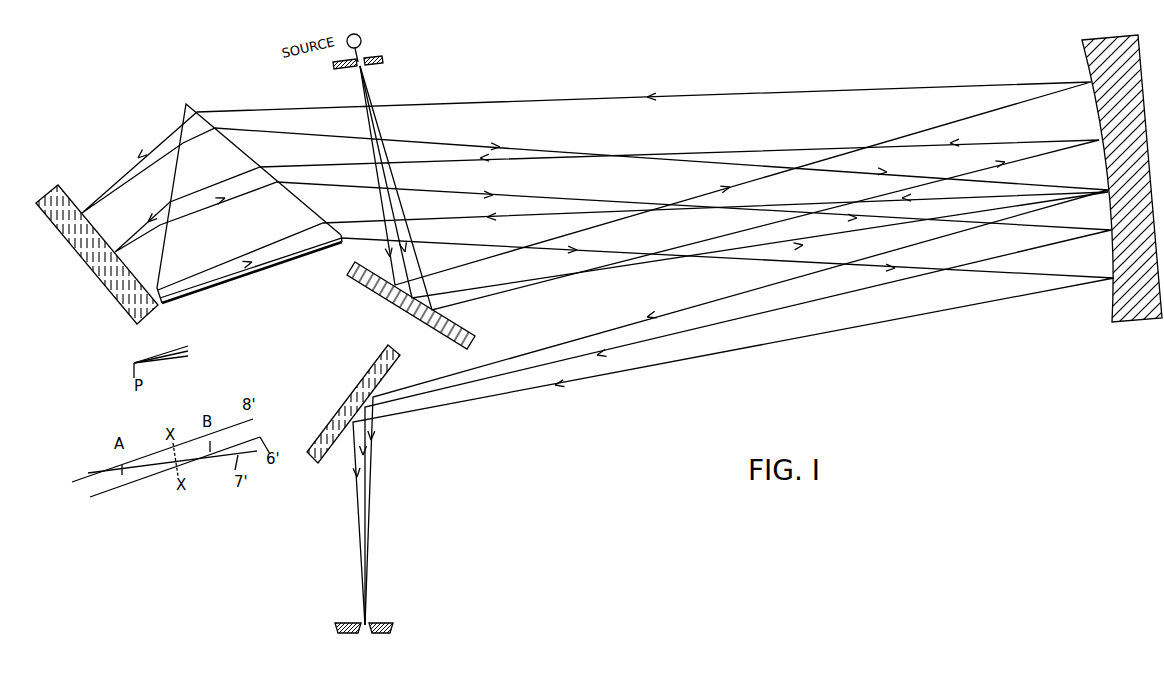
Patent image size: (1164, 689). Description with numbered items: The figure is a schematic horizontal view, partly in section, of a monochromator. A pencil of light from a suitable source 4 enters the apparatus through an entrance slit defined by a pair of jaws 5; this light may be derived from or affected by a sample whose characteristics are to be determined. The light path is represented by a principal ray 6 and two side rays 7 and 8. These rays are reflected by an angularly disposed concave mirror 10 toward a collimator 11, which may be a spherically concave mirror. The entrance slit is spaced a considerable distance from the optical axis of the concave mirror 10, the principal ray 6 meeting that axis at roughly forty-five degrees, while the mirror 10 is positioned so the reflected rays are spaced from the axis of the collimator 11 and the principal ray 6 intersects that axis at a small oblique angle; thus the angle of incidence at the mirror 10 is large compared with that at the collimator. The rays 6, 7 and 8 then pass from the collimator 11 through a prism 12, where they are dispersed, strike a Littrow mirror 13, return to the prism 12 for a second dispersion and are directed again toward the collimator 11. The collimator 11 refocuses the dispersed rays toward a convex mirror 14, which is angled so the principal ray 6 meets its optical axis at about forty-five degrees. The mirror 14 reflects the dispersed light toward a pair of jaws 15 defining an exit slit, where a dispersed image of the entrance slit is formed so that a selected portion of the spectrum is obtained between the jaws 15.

The source 4 is at (362, 40).
The jaws 5 is at (384, 58).
The principal ray 6 is at (795, 147).
The side ray 7 is at (777, 203).
The side ray 8 is at (813, 90).
The concave mirror 10 is at (392, 305).
The collimator 11 is at (1127, 325).
The prism 12 is at (233, 283).
The Littrow mirror 13 is at (108, 297).
The convex mirror 14 is at (351, 392).
The jaws 15 is at (395, 628).